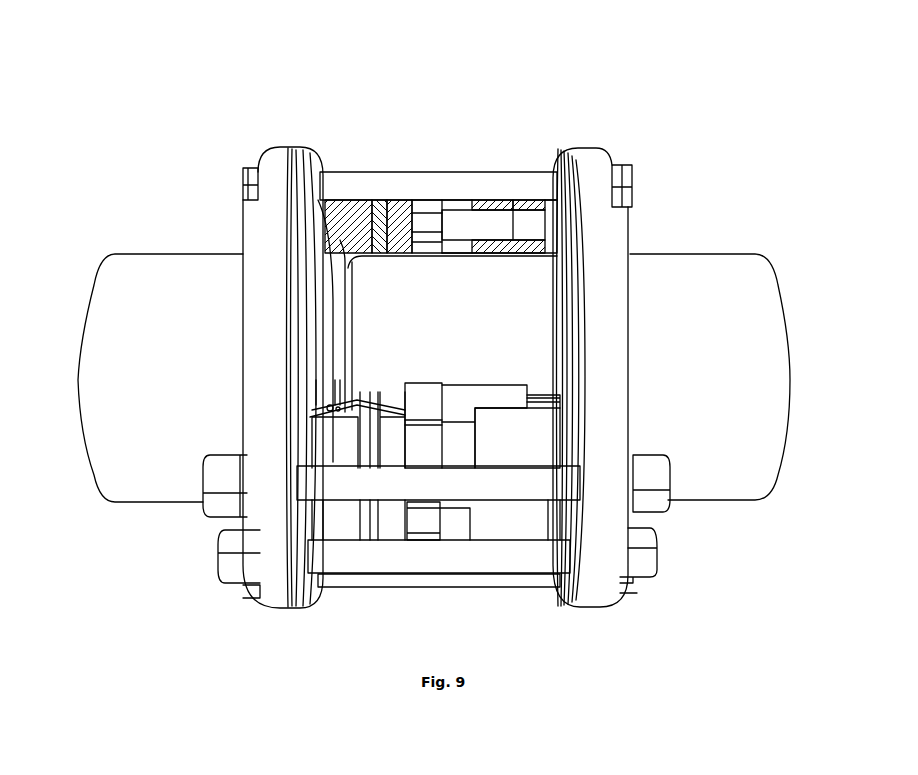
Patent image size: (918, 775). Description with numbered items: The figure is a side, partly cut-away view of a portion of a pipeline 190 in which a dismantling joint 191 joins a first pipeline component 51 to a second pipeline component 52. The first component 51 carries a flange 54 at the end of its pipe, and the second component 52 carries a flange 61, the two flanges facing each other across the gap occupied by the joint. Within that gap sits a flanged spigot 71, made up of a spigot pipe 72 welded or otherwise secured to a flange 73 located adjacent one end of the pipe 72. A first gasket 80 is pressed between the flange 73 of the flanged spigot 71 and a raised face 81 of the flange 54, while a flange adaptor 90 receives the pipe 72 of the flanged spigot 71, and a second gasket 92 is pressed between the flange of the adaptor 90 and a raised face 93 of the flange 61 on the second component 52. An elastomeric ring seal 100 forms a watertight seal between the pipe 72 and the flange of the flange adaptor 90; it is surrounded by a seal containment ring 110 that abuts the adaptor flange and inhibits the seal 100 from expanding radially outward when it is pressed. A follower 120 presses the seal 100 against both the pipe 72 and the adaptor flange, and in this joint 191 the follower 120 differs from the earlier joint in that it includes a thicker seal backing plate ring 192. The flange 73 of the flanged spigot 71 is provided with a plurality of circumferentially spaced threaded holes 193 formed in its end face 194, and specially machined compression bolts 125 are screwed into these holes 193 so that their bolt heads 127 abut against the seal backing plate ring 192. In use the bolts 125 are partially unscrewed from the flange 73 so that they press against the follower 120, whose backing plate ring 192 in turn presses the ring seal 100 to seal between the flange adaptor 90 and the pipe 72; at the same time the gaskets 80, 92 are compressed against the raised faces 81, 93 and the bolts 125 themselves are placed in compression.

The first pipeline component 51 is at (716, 250).
The second pipeline component 52 is at (144, 250).
The flange 54 is at (584, 176).
The flange 61 is at (284, 166).
The flanged spigot 71 is at (494, 196).
The pipe 72 is at (452, 333).
The flange 73 is at (517, 438).
The first gasket 80 is at (596, 224).
The raised face 81 is at (580, 247).
The flange adaptor 90 is at (345, 232).
The second gasket 92 is at (312, 230).
The raised face 93 is at (326, 240).
The elastomeric ring seal 100 is at (392, 256).
The seal containment ring 110 is at (384, 196).
The follower 120 is at (342, 522).
The compression bolt 125 is at (484, 395).
The bolt head 127 is at (422, 392).
The pipeline 190 is at (690, 192).
The dismantling joint 191 is at (537, 110).
The seal backing plate ring 192 is at (408, 196).
The threaded holes 193 is at (548, 396).
The end face 194 is at (466, 254).